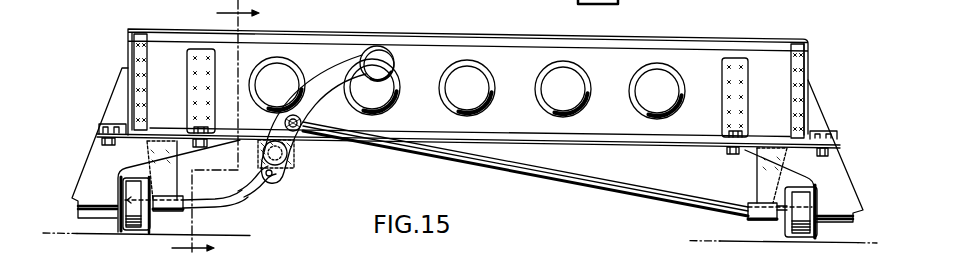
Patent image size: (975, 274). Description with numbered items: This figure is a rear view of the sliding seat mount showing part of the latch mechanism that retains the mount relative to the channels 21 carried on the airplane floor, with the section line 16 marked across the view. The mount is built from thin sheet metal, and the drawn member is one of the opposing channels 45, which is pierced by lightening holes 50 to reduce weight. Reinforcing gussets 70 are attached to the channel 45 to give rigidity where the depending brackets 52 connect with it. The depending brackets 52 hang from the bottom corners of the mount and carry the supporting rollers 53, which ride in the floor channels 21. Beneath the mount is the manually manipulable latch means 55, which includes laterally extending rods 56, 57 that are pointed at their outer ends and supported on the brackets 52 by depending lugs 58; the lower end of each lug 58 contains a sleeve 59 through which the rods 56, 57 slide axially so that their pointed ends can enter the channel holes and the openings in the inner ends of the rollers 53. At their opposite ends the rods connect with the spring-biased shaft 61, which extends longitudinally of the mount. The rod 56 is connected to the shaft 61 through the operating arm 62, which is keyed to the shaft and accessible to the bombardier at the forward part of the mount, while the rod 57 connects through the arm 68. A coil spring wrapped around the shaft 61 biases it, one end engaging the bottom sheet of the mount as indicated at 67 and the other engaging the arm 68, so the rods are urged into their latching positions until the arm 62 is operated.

The section line 16- 16 is at (215, 137).
The channel 21 is at (139, 230).
The channel 45 is at (697, 63).
The lightening hole 50 is at (473, 67).
The depending bracket 52 is at (95, 163).
The supporting roller 53 is at (127, 223).
The latch means 55 is at (437, 159).
The rod 56 is at (578, 187).
The rod 57 is at (225, 200).
The depending lug 58 is at (170, 182).
The sleeve 59 is at (756, 220).
The spring-biased shaft 61 is at (283, 163).
The operating arm 62 is at (337, 73).
The spring end engagement 67 is at (290, 150).
The arm 68 is at (272, 183).
The reinforcing gusset 70 is at (187, 67).